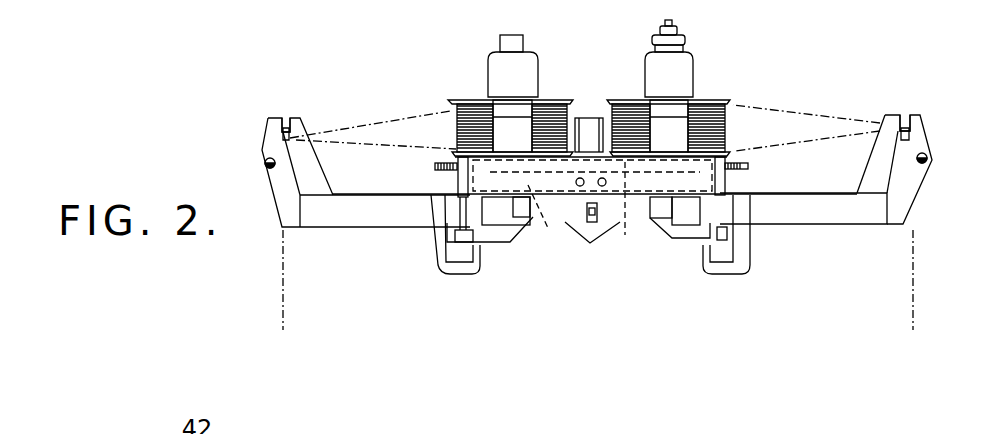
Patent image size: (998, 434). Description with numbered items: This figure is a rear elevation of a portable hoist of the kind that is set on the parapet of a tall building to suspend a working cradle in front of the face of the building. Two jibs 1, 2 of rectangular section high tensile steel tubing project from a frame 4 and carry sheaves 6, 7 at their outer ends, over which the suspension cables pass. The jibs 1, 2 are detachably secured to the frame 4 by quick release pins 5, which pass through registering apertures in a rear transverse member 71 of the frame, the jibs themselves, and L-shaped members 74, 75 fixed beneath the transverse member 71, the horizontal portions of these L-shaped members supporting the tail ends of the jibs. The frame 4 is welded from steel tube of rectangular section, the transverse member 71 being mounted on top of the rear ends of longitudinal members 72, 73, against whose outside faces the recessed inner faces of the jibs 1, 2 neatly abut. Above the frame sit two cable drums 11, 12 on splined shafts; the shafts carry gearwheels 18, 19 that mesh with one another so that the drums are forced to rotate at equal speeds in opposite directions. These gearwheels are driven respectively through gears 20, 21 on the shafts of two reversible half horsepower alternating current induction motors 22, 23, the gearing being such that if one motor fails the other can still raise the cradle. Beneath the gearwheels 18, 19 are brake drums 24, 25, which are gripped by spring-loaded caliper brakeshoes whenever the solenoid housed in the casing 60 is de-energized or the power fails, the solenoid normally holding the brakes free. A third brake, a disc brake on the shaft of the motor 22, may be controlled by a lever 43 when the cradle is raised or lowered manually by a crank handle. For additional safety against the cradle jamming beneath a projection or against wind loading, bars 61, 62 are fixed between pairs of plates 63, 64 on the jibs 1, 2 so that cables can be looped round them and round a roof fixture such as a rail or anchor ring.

The jib 1 is at (832, 214).
The jib 2 is at (376, 226).
The frame 4 is at (611, 246).
The quick release pins 5 is at (465, 145).
The sheave 6 is at (897, 130).
The sheave 7 is at (297, 138).
The drum 11 is at (631, 103).
The drum 12 is at (470, 103).
The gearwheel 18 is at (749, 165).
The gearwheel 19 is at (434, 168).
The gear 20 is at (728, 128).
The gear 21 is at (455, 110).
The motor 22 is at (690, 82).
The motor 23 is at (520, 66).
The brake drum 24 is at (633, 208).
The brake drum 25 is at (549, 220).
The lever 43 is at (682, 42).
The casing 60 is at (592, 124).
The bar 61 is at (590, 243).
The bar 62 is at (460, 273).
The plates 63 is at (745, 255).
The plates 64 is at (466, 245).
The transverse member 71 is at (458, 184).
The frame member 72 is at (657, 210).
The frame member 73 is at (521, 216).
The L-shaped member 74 is at (690, 240).
The L-shaped member 75 is at (497, 243).